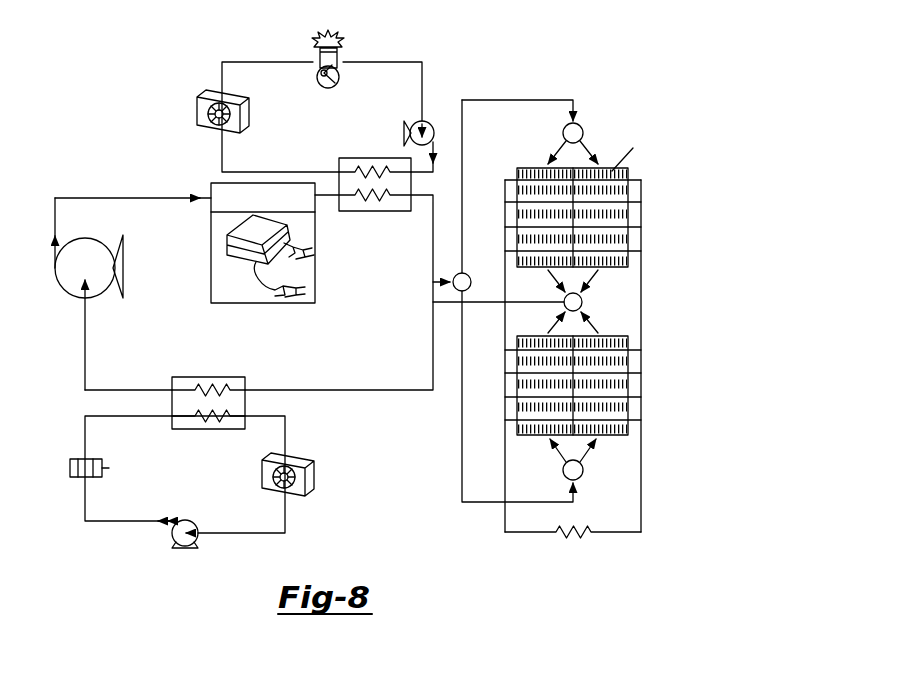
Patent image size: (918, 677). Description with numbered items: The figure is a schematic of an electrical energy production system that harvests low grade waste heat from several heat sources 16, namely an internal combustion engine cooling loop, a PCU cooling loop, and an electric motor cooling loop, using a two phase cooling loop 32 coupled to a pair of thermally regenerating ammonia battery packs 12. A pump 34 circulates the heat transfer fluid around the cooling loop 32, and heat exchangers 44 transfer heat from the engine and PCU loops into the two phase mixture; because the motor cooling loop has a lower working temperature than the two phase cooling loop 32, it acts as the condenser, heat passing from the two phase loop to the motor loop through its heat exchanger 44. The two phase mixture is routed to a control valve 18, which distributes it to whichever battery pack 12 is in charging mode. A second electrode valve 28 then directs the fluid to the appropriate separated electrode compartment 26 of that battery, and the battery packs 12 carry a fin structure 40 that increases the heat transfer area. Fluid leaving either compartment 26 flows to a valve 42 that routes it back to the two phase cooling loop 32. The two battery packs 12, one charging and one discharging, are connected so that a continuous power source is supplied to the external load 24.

The thermally regenerating ammonia battery 12 is at (540, 167).
The heat source 16 is at (385, 61).
The control valve 18 is at (466, 273).
The external load 24 is at (589, 536).
The separated electrode compartment 26 is at (517, 176).
The second electrode valve 28 is at (584, 131).
The cooling loop 32 is at (97, 197).
The pump 34 is at (72, 296).
The fin structure 40 is at (622, 262).
The valve 42 is at (583, 304).
The heat exchanger 44 is at (411, 181).